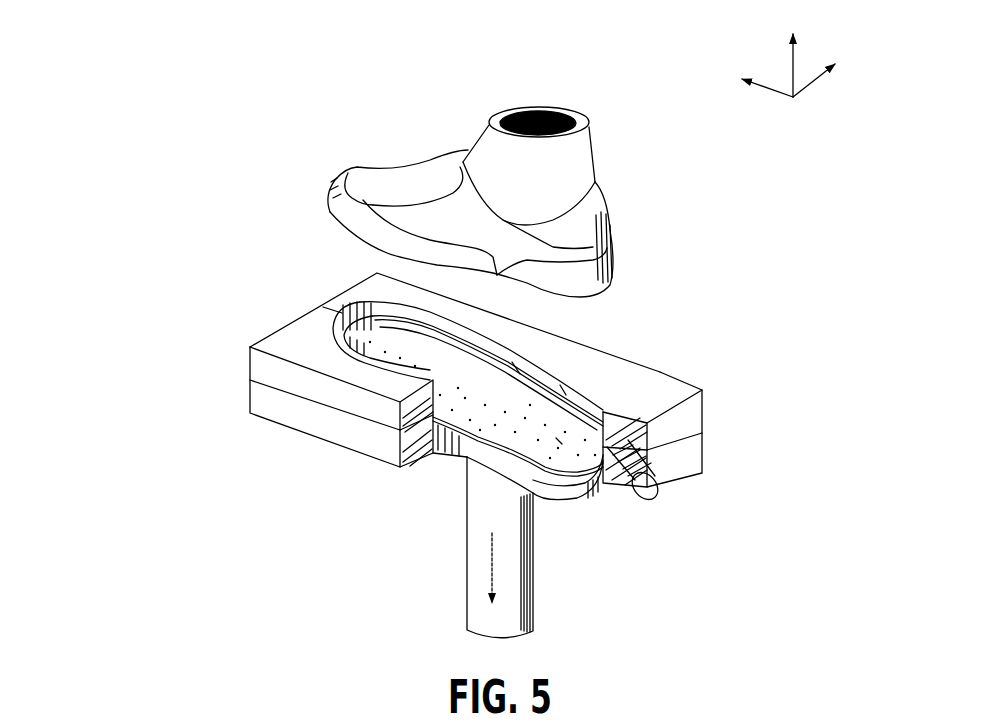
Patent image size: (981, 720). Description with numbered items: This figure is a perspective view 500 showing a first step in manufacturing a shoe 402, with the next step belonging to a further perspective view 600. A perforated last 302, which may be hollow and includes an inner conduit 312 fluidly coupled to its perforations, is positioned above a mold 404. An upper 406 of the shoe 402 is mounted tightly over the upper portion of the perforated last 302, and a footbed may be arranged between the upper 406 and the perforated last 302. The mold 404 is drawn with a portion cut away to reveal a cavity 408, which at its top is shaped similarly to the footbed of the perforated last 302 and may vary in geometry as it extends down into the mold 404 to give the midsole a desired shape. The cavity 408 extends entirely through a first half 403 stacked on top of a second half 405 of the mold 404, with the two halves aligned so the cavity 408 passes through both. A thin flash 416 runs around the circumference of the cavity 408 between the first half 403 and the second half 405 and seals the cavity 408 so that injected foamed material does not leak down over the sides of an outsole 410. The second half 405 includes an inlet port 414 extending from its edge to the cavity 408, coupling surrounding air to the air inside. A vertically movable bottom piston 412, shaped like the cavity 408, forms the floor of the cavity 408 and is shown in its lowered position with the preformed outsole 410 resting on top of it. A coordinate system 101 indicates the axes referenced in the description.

The perspective view 500 is at (140, 42).
The shoe 402 is at (278, 86).
The perforated last 302 is at (580, 158).
The inner conduit 312 is at (553, 113).
The upper 406 is at (424, 157).
The mold 404 is at (294, 283).
The first half 403 is at (250, 365).
The second half 405 is at (250, 408).
The flash 416 is at (545, 385).
The cavity 408 is at (590, 376).
The outsole 410 is at (563, 435).
The bottom piston 412 is at (573, 493).
The inlet port 414 is at (657, 492).
The coordinate system 101 is at (816, 36).
The perspective view 600 is at (126, 719).